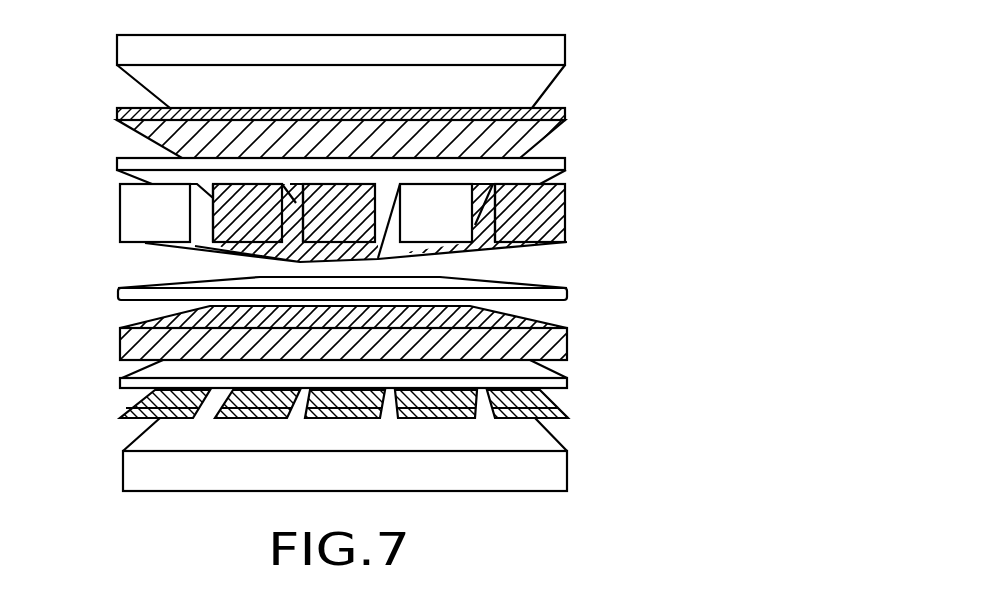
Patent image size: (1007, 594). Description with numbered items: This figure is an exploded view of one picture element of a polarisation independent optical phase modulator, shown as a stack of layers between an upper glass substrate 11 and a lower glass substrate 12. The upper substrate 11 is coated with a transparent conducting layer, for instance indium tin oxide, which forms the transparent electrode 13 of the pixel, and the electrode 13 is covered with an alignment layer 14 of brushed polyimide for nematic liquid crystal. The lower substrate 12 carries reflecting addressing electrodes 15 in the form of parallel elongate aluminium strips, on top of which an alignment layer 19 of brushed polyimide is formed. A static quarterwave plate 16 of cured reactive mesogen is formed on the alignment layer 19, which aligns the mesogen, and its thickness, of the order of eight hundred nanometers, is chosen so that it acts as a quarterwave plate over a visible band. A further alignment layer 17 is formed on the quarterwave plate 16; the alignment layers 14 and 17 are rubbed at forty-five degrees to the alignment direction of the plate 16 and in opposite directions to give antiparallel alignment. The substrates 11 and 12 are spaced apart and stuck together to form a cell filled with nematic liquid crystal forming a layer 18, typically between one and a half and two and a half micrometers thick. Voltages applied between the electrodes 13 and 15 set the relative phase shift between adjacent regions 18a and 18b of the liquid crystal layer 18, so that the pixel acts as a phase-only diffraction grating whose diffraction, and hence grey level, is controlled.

The upper glass substrate 11 is at (552, 53).
The transparent electrode 13 is at (562, 117).
The alignment layer 14 is at (558, 160).
The nematic liquid crystal layer 18 is at (456, 233).
The liquid crystal region 18a is at (121, 220).
The liquid crystal region 18b is at (228, 252).
The further alignment layer 17 is at (566, 288).
The static quarterwave plate 16 is at (565, 342).
The alignment layer 19 is at (567, 383).
The reflecting addressing electrodes 15 is at (558, 417).
The lower glass substrate 12 is at (560, 475).